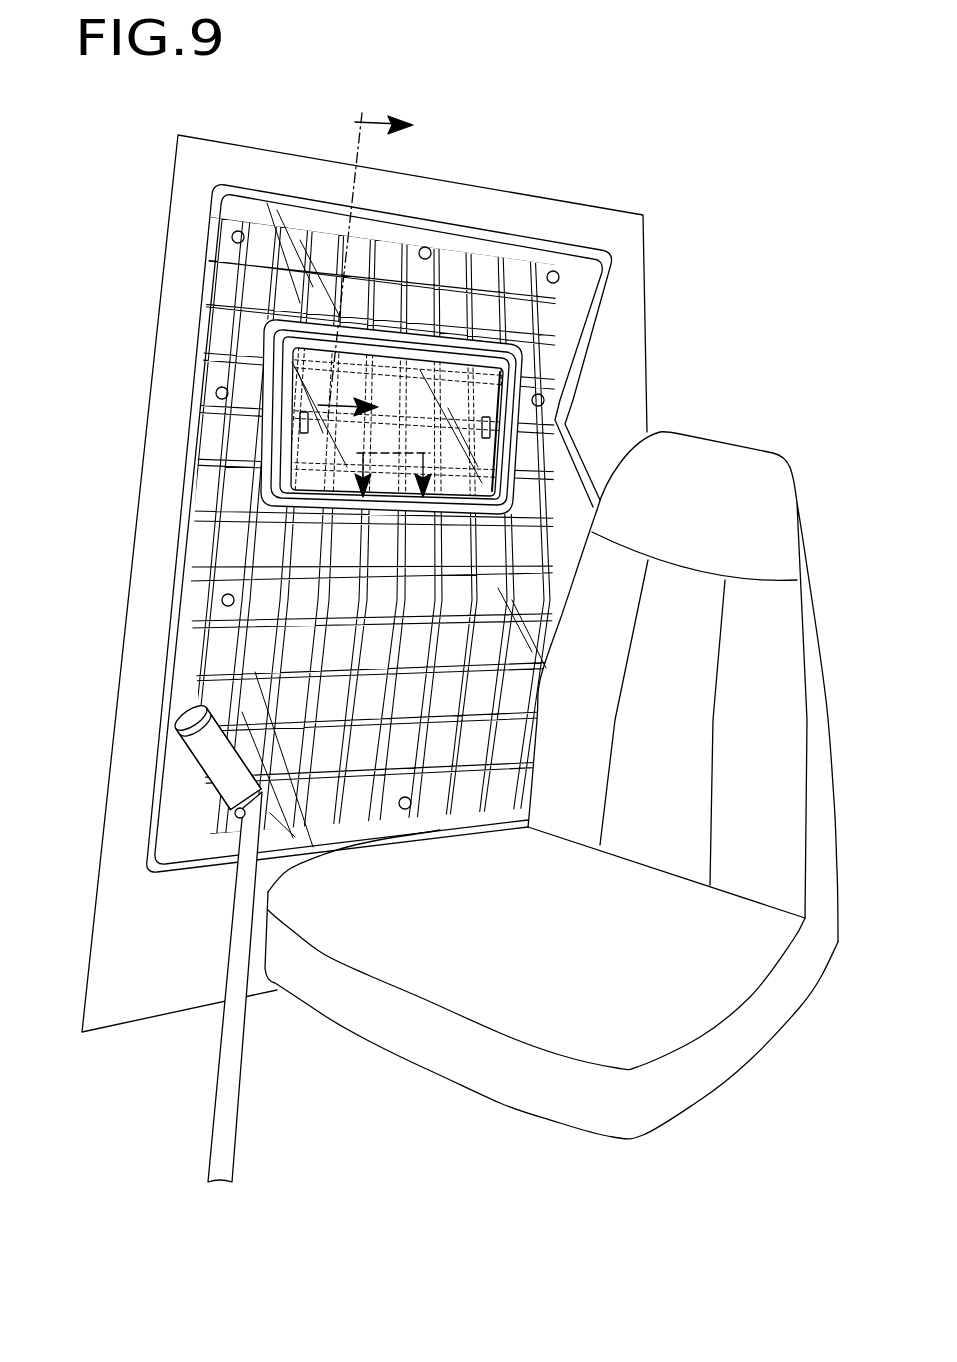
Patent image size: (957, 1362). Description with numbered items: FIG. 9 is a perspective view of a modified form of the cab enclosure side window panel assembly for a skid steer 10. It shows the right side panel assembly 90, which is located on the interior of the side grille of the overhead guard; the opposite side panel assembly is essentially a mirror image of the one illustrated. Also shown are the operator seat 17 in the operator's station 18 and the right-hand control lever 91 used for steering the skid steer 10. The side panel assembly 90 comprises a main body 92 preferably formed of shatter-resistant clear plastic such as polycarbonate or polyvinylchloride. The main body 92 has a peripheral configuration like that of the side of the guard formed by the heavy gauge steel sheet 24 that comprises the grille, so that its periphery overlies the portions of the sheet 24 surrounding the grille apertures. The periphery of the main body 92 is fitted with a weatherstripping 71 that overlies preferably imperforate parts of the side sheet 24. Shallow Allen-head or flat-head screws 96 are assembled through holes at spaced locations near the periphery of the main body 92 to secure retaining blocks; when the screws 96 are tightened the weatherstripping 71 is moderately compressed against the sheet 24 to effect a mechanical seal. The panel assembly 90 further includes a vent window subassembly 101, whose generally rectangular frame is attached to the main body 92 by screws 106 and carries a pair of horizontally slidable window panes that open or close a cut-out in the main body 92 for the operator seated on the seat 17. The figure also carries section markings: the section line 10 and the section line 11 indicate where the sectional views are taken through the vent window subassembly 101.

The seat 17 is at (517, 1085).
The operator's station 18 is at (760, 394).
The steel sheet 24 is at (160, 420).
The weatherstripping 71 is at (208, 293).
The side panel assembly 90 is at (378, 621).
The right-hand control lever 91 is at (217, 1102).
The main body 92 is at (193, 667).
The screws 96 is at (425, 247).
The vent window subassembly 101 is at (525, 372).
The screws 106 is at (470, 340).
The skid steer 10 is at (385, 263).
The section line 11- 11 is at (389, 479).